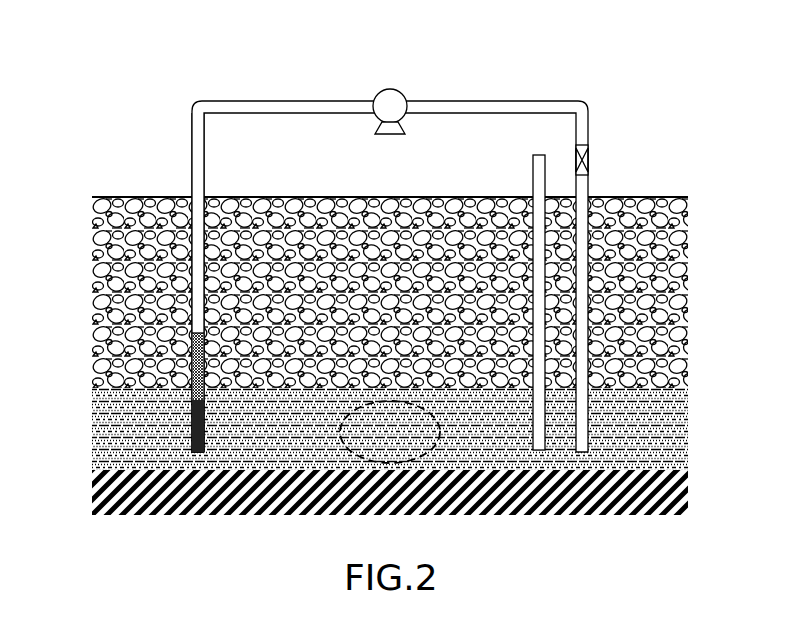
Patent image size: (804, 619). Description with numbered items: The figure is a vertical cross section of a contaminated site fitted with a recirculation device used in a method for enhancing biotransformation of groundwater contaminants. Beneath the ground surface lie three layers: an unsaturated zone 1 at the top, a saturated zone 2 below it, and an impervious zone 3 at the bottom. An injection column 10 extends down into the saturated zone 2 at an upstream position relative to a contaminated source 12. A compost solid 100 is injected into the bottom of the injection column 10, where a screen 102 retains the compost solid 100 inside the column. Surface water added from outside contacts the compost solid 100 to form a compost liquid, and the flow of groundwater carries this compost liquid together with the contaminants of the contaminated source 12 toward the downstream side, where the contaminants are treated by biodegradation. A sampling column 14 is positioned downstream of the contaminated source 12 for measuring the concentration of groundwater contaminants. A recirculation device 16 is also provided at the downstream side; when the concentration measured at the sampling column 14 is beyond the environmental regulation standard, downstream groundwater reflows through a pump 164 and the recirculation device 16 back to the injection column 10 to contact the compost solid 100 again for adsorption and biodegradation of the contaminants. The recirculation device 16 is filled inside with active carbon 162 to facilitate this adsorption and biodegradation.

The unsaturated zone 1 is at (120, 283).
The saturated zone 2 is at (122, 428).
The impervious zone 3 is at (115, 490).
The injection column 10 is at (192, 181).
The compost solid 100 is at (192, 350).
The screen 102 is at (192, 425).
The contaminated source 12 is at (390, 463).
The sampling column 14 is at (533, 178).
The recirculation device 16 is at (588, 133).
The active carbon 162 is at (584, 161).
The pump 164 is at (393, 100).